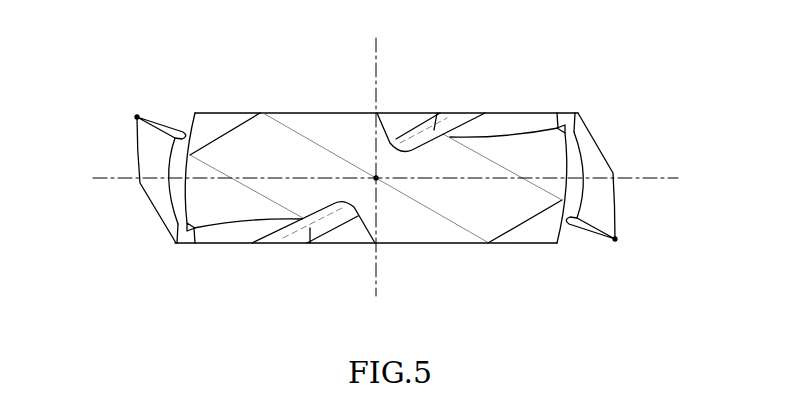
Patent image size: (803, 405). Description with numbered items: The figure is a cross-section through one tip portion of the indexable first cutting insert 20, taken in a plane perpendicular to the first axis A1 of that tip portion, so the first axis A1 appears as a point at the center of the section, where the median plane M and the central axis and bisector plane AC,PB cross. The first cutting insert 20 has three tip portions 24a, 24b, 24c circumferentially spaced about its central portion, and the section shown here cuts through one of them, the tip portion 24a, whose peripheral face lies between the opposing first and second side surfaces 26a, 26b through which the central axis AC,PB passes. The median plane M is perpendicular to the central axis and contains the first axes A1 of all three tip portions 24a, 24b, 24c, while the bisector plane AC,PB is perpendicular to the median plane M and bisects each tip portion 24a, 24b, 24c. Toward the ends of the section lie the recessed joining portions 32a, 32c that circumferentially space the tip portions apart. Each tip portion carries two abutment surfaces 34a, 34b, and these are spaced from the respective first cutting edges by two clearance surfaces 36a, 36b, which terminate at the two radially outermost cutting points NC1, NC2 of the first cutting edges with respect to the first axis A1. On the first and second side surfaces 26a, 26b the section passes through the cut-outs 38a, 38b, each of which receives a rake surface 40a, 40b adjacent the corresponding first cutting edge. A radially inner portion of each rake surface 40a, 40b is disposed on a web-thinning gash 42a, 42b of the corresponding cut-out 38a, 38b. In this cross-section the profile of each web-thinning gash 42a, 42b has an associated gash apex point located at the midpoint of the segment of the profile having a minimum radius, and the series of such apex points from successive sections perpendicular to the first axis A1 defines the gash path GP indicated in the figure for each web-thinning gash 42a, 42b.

The first cutting insert 20 is at (545, 98).
The tip portion 24a is at (490, 212).
The tip portion 24b is at (623, 160).
The tip portion 24c is at (130, 185).
The first side surface 26a is at (444, 250).
The second side surface 26b is at (337, 105).
The recessed joining portion 32a is at (582, 142).
The recessed joining portion 32c is at (168, 198).
The abutment surface 34a is at (221, 120).
The abutment surface 34b is at (162, 226).
The clearance surface 36a is at (617, 198).
The clearance surface 36b is at (135, 151).
The cut-out 38a is at (261, 240).
The cut-out 38b is at (484, 105).
The rake surface 40a is at (245, 216).
The rake surface 40b is at (498, 133).
The web-thinning gash 42a is at (345, 222).
The web-thinning gash 42b is at (400, 135).
The gash path GP is at (310, 243).
The central axis and bisector plane AC,PB is at (374, 166).
The median plane M is at (387, 178).
The first axis A1 is at (375, 179).
The radially outermost cutting point NC1 is at (616, 239).
The radially outermost cutting point NC2 is at (136, 116).